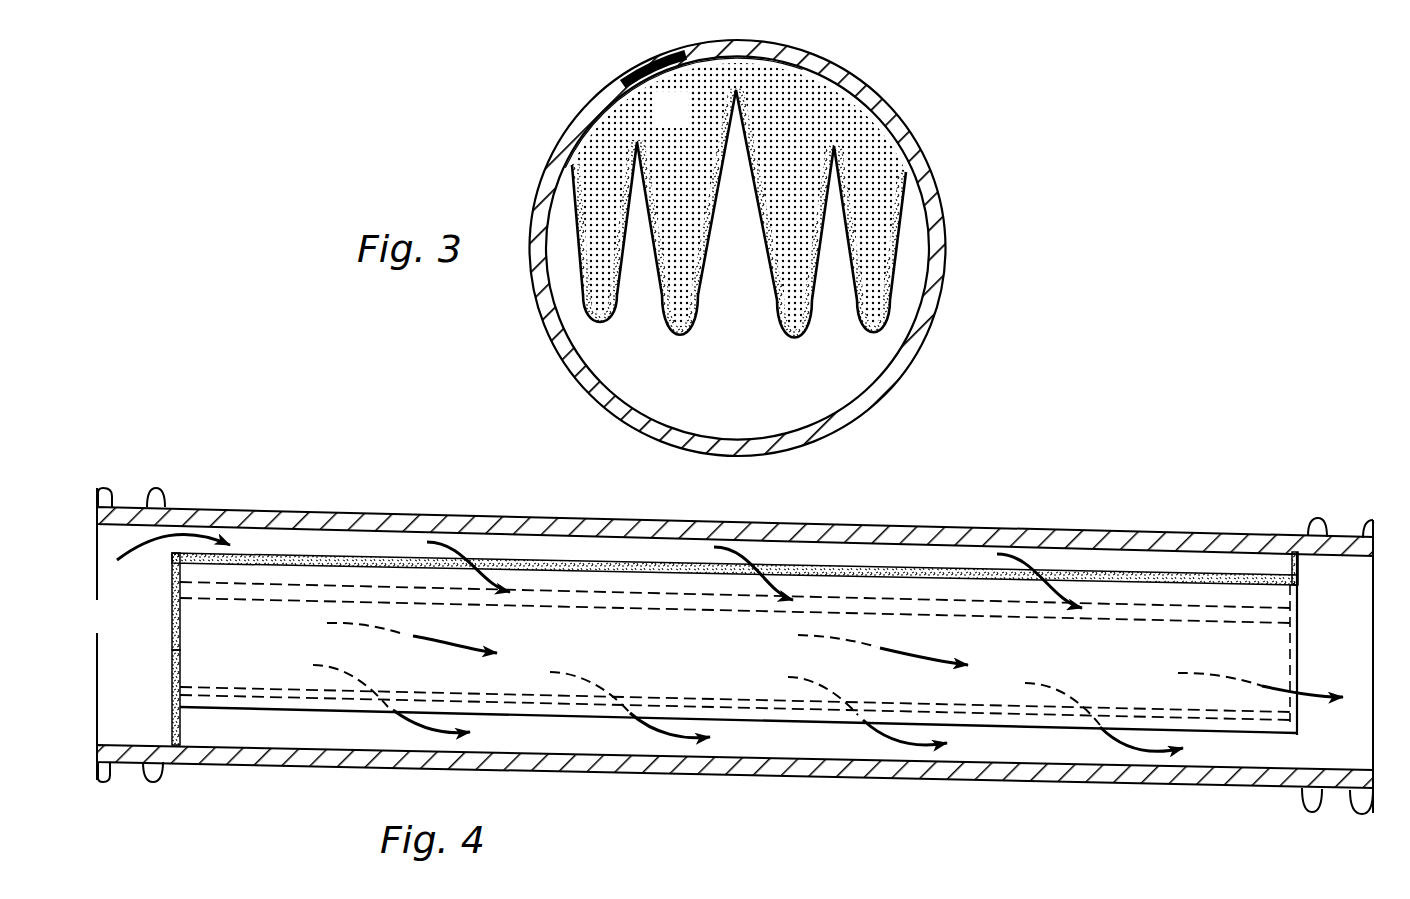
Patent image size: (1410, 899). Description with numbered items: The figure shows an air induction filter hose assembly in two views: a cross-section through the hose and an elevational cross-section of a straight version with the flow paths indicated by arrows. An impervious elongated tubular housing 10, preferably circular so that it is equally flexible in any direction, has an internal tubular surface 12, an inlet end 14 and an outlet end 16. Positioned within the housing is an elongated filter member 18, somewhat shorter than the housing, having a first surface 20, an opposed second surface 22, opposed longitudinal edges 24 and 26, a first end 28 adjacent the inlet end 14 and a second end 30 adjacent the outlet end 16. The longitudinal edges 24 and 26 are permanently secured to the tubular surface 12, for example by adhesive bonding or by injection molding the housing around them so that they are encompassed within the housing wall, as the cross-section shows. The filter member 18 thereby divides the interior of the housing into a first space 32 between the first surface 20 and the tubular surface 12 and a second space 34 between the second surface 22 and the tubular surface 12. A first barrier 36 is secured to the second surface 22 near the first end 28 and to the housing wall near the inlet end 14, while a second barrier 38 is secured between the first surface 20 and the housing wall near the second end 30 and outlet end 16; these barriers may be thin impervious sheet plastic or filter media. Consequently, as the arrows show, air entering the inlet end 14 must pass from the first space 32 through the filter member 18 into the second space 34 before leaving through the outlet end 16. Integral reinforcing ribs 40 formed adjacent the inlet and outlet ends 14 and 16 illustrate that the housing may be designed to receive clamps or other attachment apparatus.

In FIG. 3, the tubular housing 10 is at (926, 328).
In FIG. 4, the tubular housing 10 is at (1080, 543).
In FIG. 4, the internal tubular surface 12 is at (1222, 770).
In FIG. 4, the inlet end 14 is at (92, 500).
In FIG. 4, the outlet end 16 is at (1373, 520).
In FIG. 3, the filter member 18 is at (866, 142).
In FIG. 4, the filter member 18 is at (906, 553).
In FIG. 3, the first surface 20 is at (742, 110).
In FIG. 3, the second surface 22 is at (813, 312).
In FIG. 3, the longitudinal edge 24 is at (920, 168).
In FIG. 3, the longitudinal edge 26 is at (562, 160).
In FIG. 4, the first end 28 is at (172, 575).
In FIG. 4, the second end 30 is at (1297, 600).
In FIG. 3, the first space 32 is at (680, 122).
In FIG. 4, the first space 32 is at (600, 553).
In FIG. 3, the second space 34 is at (768, 408).
In FIG. 4, the second space 34 is at (553, 737).
In FIG. 4, the first barrier 36 is at (172, 662).
In FIG. 4, the second barrier 38 is at (1300, 556).
In FIG. 4, the reinforcing ribs 40 is at (160, 500).